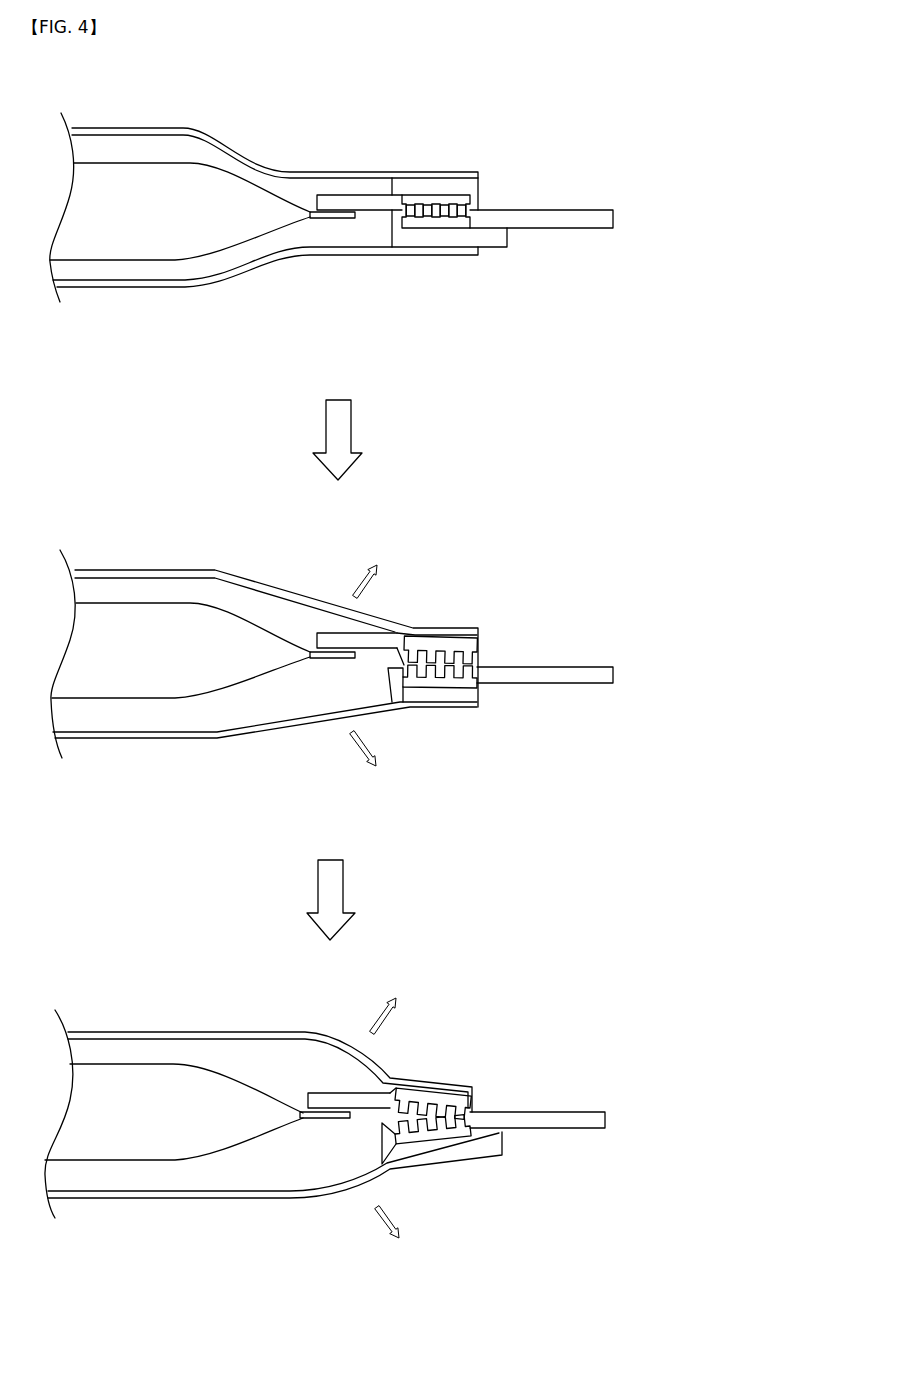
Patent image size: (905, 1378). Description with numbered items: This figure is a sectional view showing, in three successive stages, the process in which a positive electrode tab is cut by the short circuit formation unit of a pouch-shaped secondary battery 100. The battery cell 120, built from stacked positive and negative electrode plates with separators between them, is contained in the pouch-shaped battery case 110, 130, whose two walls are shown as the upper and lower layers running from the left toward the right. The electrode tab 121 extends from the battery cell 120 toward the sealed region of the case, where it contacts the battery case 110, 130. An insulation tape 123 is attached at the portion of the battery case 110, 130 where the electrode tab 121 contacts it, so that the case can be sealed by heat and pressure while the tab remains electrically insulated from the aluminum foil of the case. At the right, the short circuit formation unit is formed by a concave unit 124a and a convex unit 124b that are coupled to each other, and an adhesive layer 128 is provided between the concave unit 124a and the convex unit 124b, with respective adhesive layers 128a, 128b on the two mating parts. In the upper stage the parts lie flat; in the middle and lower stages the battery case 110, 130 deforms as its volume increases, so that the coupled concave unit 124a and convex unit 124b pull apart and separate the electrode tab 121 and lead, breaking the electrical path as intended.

The pouch-shaped secondary battery 100 is at (264, 637).
The battery case 110 is at (210, 572).
The battery cell 120 is at (178, 245).
The electrode tab 121 is at (327, 220).
The insulation tape 123 is at (485, 678).
The concave unit 124a is at (548, 222).
The convex unit 124b is at (372, 198).
The adhesive layer 128 is at (468, 662).
The adhesive layer 128a is at (413, 1128).
The adhesive layer 128b is at (423, 1097).
The battery case 130 is at (218, 737).